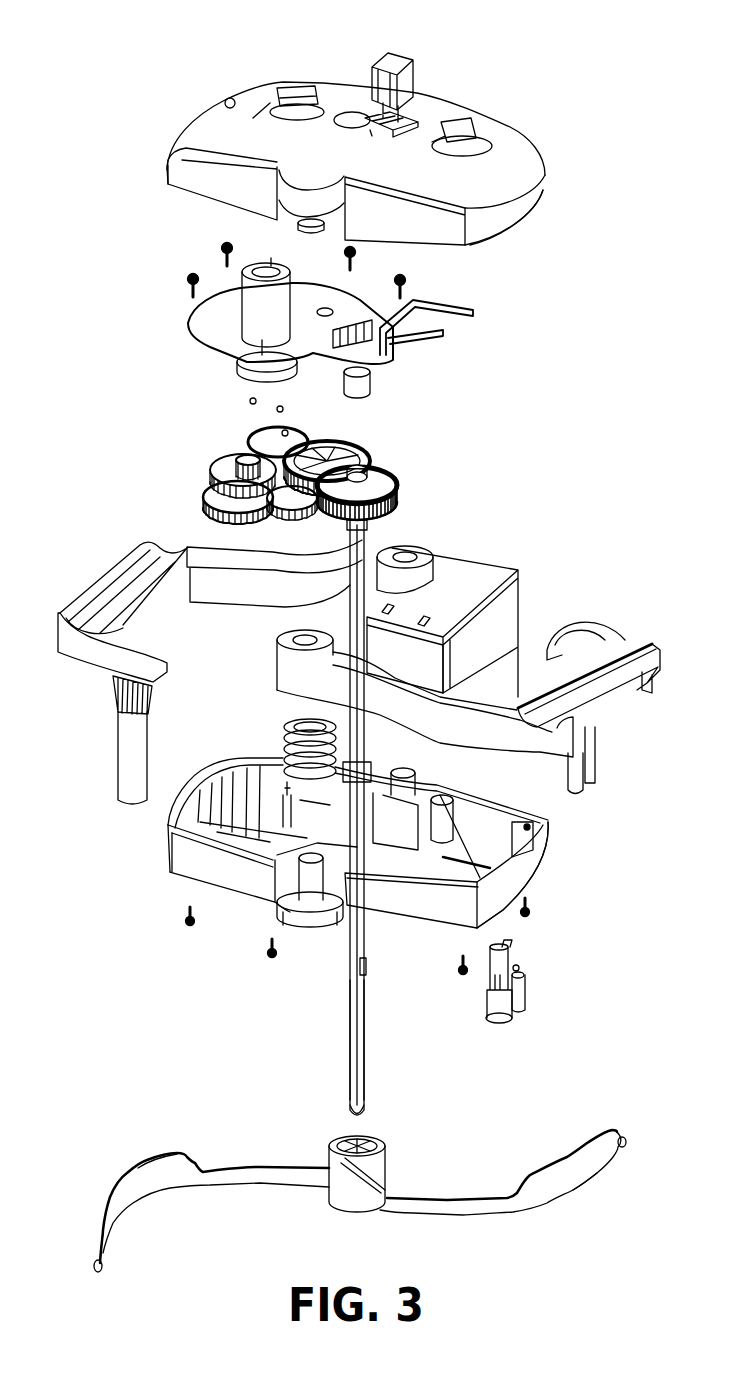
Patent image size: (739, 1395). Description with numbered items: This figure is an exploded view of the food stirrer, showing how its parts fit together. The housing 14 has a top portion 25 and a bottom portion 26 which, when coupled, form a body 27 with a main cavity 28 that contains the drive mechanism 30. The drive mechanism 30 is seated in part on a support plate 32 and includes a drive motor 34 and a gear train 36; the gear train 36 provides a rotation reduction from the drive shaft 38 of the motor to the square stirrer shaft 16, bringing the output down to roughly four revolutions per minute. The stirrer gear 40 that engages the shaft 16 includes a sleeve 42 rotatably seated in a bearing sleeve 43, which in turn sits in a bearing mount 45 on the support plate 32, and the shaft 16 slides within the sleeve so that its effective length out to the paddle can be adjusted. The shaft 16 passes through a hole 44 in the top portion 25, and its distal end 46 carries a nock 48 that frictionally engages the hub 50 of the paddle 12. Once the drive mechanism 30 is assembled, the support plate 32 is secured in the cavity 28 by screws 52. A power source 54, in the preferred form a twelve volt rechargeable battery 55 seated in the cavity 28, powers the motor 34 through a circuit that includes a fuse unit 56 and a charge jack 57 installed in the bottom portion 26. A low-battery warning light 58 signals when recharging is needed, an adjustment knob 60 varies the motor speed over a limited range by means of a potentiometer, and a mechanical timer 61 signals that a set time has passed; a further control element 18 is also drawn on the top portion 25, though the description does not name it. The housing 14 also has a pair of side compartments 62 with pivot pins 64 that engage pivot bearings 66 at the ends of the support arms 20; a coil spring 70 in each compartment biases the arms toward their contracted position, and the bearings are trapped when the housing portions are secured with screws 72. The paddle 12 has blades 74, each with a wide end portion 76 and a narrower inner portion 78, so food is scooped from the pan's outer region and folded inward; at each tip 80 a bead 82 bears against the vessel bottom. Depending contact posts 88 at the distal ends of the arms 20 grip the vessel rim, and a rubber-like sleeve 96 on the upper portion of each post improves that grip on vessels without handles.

The paddle 12 is at (583, 1142).
The housing 14 is at (540, 202).
The stirrer shaft 16 is at (367, 540).
The switch button 18 is at (403, 57).
The support arms 20 is at (258, 605).
The top portion 25 is at (180, 130).
The bottom portion 26 is at (548, 842).
The body 27 is at (168, 178).
The main cavity 28 is at (487, 808).
The drive mechanism 30 is at (140, 360).
The support plate 32 is at (197, 311).
The drive motor 34 is at (250, 265).
The gear train 36 is at (370, 463).
The drive shaft 38 is at (236, 360).
The stirrer gear 40 is at (335, 515).
The sleeve 42 is at (394, 486).
The bearing sleeve 43 is at (372, 388).
The hole 44 is at (352, 112).
The bearing mount 45 is at (380, 325).
The distal end 46 is at (348, 1005).
The nock 48 is at (370, 1108).
The hub 50 is at (390, 1152).
The screws 52 is at (193, 276).
The power source 54 is at (525, 585).
The rechargeable battery 55 is at (520, 635).
The fuse unit 56 is at (512, 1020).
The charge jack 57 is at (528, 992).
The low-battery warning light 58 is at (226, 100).
The adjustment knob 60 is at (290, 92).
The mechanical timer 61 is at (488, 144).
The side compartments 62 is at (338, 925).
The pivot pins 64 is at (418, 783).
The pivot bearings 66 is at (418, 555).
The coil spring 70 is at (290, 730).
The screws 72 is at (185, 925).
The blades 74 is at (195, 1165).
The wide end portion 76 is at (560, 1177).
The narrower inner portion 78 is at (420, 1207).
The tip 80 is at (97, 1225).
The beads 82 is at (95, 1270).
The contact posts 88 is at (118, 760).
The rubber-like sleeve 96 is at (118, 690).